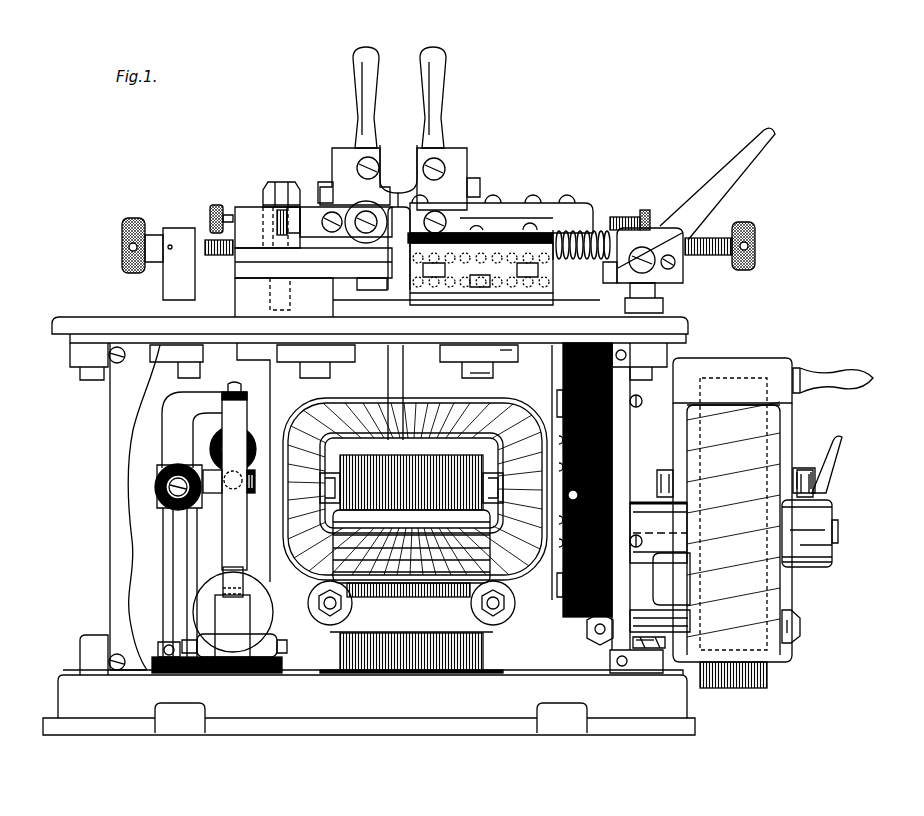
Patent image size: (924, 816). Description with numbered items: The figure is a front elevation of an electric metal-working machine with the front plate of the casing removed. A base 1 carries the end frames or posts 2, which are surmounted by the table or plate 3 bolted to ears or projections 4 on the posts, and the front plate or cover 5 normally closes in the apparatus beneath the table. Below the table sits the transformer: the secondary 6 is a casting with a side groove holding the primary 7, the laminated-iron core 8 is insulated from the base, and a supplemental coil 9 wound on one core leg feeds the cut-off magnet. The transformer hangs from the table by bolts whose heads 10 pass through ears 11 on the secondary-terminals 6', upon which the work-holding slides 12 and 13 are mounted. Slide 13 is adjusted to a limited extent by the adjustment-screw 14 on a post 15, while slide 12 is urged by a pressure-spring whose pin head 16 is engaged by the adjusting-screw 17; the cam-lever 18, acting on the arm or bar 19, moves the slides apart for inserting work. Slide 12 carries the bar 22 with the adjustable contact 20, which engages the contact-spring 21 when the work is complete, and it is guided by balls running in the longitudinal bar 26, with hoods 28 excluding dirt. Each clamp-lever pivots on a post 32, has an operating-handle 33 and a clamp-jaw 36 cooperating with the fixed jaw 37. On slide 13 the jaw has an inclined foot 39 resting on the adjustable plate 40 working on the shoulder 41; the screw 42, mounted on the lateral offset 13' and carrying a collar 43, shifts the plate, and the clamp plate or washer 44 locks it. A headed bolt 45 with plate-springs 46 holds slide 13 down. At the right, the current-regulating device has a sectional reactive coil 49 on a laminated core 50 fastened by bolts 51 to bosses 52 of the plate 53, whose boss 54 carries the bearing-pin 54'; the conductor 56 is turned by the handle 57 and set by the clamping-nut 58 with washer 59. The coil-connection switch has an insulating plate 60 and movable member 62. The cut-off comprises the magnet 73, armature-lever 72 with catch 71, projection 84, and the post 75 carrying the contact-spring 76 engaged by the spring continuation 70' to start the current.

The base 1 is at (369, 685).
The end frames or posts 2 is at (625, 433).
The table or plate 3 is at (690, 326).
The ears or projections 4 is at (72, 350).
The front plate or cover 5 is at (331, 506).
The transformer-secondary 6 is at (417, 515).
The secondary-terminals 6' is at (417, 326).
The primary 7 is at (310, 578).
The laminated-iron core 8 is at (483, 646).
The supplemental coil 9 is at (508, 578).
The bolt heads 10 is at (494, 372).
The ears 11 is at (513, 351).
The work-holding slide 12 is at (515, 215).
The work-holding slide 13 is at (297, 265).
The lateral offset or projection 13' is at (267, 227).
The adjustment-screw 14 is at (210, 240).
The post 15 is at (168, 280).
The pin head 16 is at (612, 243).
The adjusting-screw 17 is at (755, 248).
The cam-lever 18 is at (705, 180).
The arm or bar 19 is at (556, 235).
The adjustable contact 20 is at (622, 222).
The contact-spring 21 is at (594, 225).
The bar or arm 22 is at (560, 215).
The longitudinal bar 26 is at (425, 275).
The hoods 28 is at (545, 237).
The post or vertical projection 32 is at (340, 158).
The operating-handle 33 is at (353, 98).
The clamp-jaw 36 is at (422, 150).
The fixed jaw 37 is at (396, 230).
The inclined foot 39 is at (352, 236).
The longitudinally-adjustable plate 40 is at (323, 240).
The shoulder or guide 41 is at (258, 245).
The screw 42 is at (213, 205).
The collar or flange 43 is at (294, 210).
The clamp plate or washer 44 is at (355, 205).
The headed bolt or pin 45 is at (280, 183).
The plate-springs 46 is at (258, 207).
The sectional reactive coil 49 is at (793, 600).
The laminated core 50 is at (767, 681).
The bolts 51 is at (801, 630).
The bosses 52 is at (663, 650).
The plate 53 is at (655, 578).
The boss 54 is at (721, 511).
The bearing-pin 54' is at (853, 529).
The closed circuit band or conductor 56 is at (775, 358).
The operating-handle 57 is at (852, 375).
The clamping-nut 58 is at (820, 493).
The washer 59 is at (786, 566).
The insulating plate 60 is at (590, 640).
The movable member 62 is at (566, 618).
The spring continuation 70' is at (252, 476).
The catch 71 is at (233, 609).
The armature-lever 72 is at (222, 626).
The cut-off magnet 73 is at (244, 580).
The post 75 is at (172, 588).
The contact-spring 76 is at (251, 494).
The projection 84 is at (210, 538).